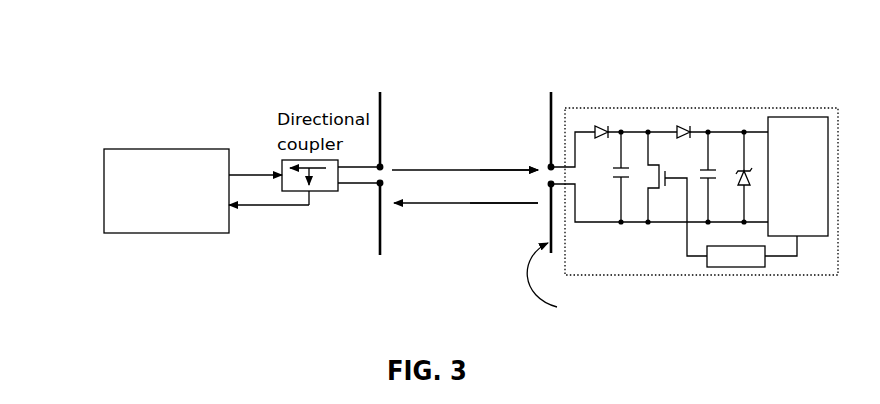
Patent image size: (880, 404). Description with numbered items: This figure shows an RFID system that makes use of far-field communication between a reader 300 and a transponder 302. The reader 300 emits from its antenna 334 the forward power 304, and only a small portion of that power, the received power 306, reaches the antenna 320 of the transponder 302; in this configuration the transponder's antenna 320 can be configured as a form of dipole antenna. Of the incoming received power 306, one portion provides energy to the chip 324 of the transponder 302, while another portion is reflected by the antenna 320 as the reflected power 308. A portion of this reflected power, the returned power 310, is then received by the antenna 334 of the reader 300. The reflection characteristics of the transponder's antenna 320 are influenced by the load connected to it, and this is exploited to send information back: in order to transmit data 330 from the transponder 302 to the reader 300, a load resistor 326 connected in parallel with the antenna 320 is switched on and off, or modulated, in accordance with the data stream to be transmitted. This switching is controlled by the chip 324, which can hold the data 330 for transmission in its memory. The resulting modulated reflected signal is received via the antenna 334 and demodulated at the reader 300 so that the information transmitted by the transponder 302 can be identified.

The reader 300 is at (122, 149).
The transponder 302 is at (694, 186).
The power P1 304 is at (408, 130).
The power P1' 306 is at (511, 130).
The power P2 308 is at (511, 235).
The power P2' 310 is at (409, 235).
The antenna of the transponder 320 is at (551, 103).
The chip 324 is at (798, 176).
The load resistor 326 is at (693, 255).
The data 330 is at (790, 220).
The antenna of the reader 334 is at (380, 100).